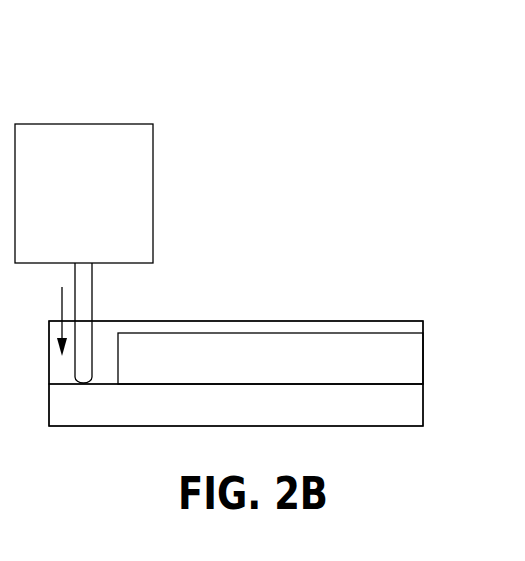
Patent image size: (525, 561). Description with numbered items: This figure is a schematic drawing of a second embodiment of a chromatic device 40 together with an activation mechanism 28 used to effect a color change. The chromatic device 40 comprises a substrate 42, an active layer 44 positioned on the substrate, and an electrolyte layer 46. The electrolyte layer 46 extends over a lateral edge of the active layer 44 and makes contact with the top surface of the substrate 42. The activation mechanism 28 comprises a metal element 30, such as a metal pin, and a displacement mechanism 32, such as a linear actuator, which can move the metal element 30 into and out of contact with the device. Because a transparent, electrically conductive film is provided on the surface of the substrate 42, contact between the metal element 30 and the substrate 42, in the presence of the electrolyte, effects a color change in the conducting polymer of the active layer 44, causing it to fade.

The activation mechanism 28 is at (198, 230).
The metal element 30 is at (82, 293).
The displacement mechanism 32 is at (84, 193).
The chromatic device 40 is at (258, 282).
The substrate 42 is at (415, 402).
The active layer 44 is at (415, 355).
The electrolyte layer 46 is at (415, 327).